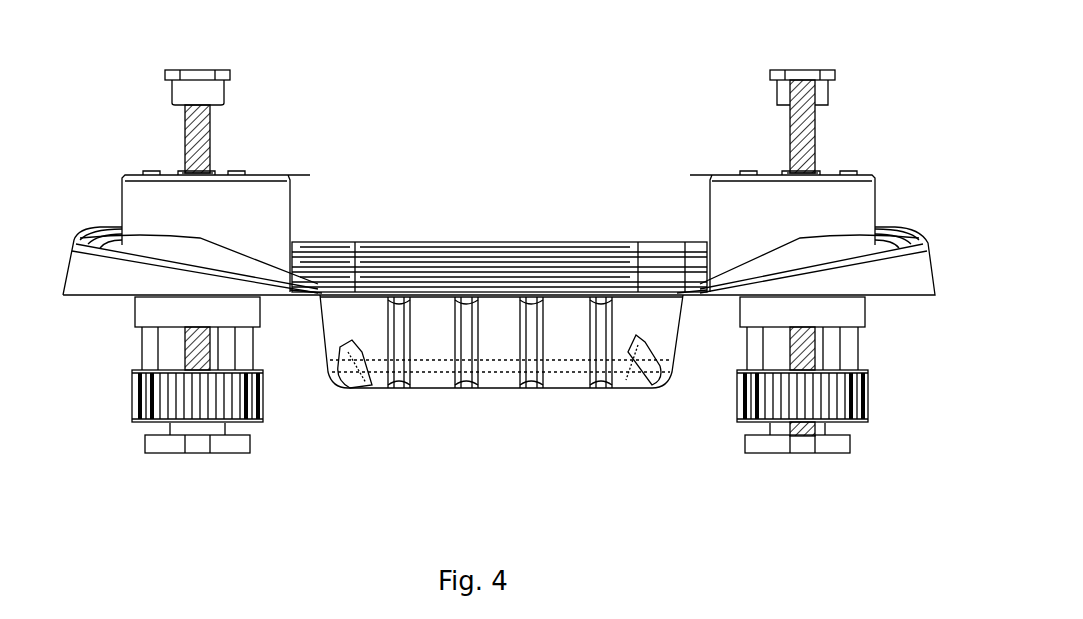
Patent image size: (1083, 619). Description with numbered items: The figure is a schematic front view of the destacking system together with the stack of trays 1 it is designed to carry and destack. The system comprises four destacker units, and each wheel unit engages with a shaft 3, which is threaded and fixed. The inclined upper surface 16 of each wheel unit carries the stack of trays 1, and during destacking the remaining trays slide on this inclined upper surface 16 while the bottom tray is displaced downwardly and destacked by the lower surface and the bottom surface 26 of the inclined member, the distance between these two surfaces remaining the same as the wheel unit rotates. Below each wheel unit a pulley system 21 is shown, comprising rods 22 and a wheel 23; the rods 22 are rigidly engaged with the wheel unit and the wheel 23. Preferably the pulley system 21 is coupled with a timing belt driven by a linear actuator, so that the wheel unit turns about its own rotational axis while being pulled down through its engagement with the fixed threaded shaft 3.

The stack of trays 1 is at (471, 222).
The shaft 3 is at (815, 135).
The inclined upper surface 16 is at (888, 248).
The bottom surface 26 is at (895, 292).
The pulley system 21 is at (722, 397).
The rods 22 is at (775, 343).
The wheel 23 is at (857, 403).